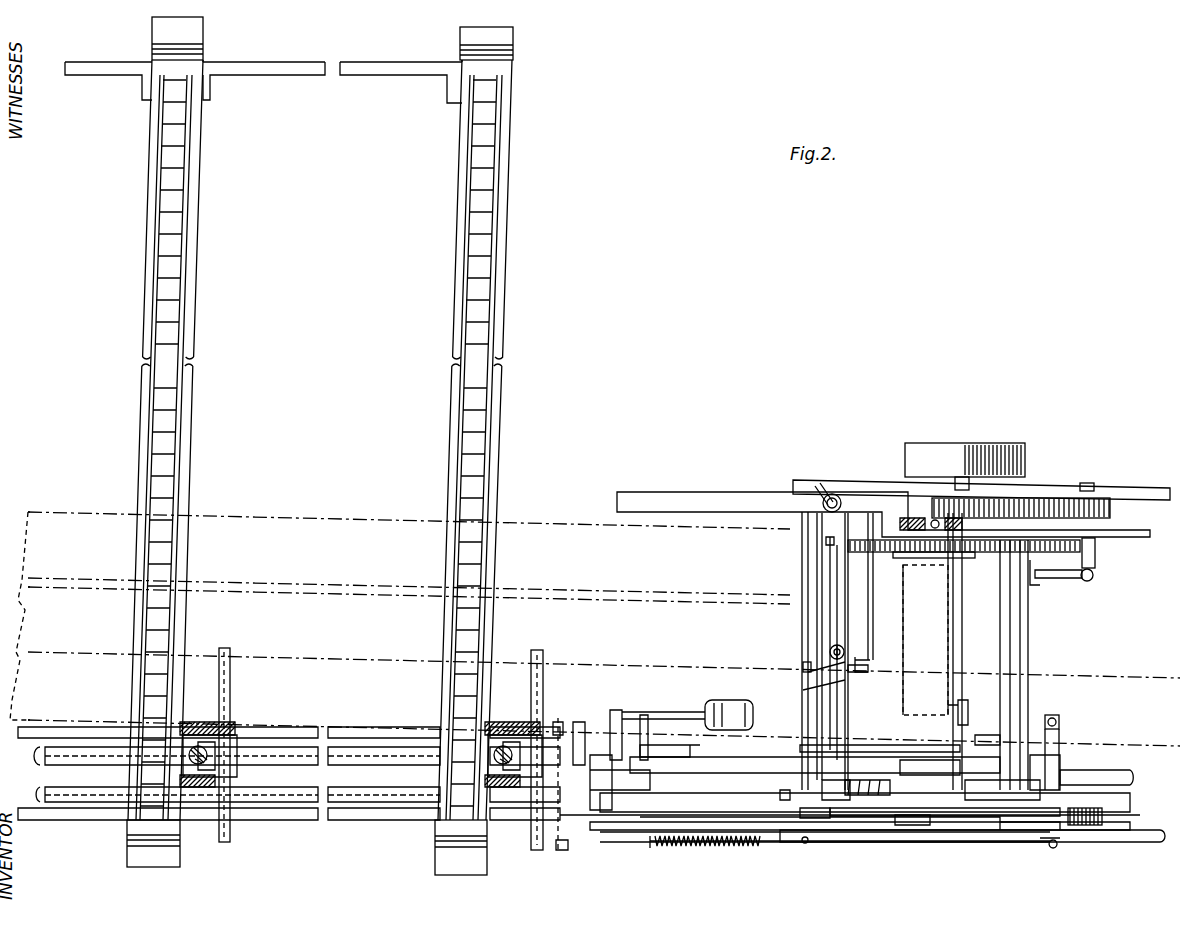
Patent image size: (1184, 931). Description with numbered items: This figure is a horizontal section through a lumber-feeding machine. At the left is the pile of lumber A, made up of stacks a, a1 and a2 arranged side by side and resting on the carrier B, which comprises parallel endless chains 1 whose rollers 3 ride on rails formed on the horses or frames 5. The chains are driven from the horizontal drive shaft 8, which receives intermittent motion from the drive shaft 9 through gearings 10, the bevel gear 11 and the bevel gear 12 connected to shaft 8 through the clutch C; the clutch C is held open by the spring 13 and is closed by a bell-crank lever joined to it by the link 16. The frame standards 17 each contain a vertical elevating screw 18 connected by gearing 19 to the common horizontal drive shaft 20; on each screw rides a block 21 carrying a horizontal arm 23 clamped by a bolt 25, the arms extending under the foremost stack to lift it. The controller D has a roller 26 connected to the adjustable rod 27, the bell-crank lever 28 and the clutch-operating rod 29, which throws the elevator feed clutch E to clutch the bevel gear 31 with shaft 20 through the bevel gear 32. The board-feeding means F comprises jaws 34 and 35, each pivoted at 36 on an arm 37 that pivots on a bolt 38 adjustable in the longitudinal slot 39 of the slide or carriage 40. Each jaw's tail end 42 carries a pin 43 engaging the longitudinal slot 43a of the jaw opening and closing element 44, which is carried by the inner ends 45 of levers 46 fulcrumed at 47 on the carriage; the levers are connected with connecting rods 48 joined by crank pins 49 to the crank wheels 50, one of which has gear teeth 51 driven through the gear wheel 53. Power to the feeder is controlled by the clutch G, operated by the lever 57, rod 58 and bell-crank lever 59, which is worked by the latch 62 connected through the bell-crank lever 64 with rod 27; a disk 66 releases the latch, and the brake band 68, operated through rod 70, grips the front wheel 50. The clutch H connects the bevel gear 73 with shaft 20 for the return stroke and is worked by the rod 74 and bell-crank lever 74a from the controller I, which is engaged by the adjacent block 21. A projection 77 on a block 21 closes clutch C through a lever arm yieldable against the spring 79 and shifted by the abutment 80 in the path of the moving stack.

The endless chains 1 is at (178, 272).
The rollers 3 is at (185, 448).
The horses or frames 5 is at (188, 412).
The horizontal drive shaft 8 is at (355, 802).
The drive shaft 9 is at (965, 456).
The gearings 10 is at (550, 856).
The bevel gear 11 is at (867, 799).
The bevel gear 12 is at (826, 840).
The spring 13 is at (700, 840).
The link 16 is at (640, 825).
The standards 17 is at (192, 725).
The vertical elevating screw 18 is at (232, 738).
The gearing 19 is at (307, 847).
The horizontal drive shaft 20 is at (305, 735).
The block 21 is at (236, 768).
The horizontal arm 23 is at (232, 656).
The bolt 25 is at (260, 748).
The roller 26 is at (733, 703).
The adjustable rod 27 is at (640, 740).
The bell-crank lever 28 is at (865, 794).
The clutch-operating rod 29 is at (755, 842).
The bevel gear 31 is at (1010, 842).
The bevel gear 32 is at (985, 735).
The jaw 34 is at (880, 736).
The jaw 35 is at (870, 666).
The pivot 36 is at (815, 690).
The arm 37 is at (845, 650).
The bolt 38 is at (828, 652).
The longitudinal slot 39 is at (830, 622).
The slide or carriage 40 is at (822, 597).
The tail end 42 is at (830, 668).
The pin 43 is at (803, 667).
The longitudinal slot 43a is at (820, 700).
The jaw opening and closing element 44 is at (815, 562).
The inner ends 45 is at (800, 530).
The levers 46 is at (825, 490).
The fulcrum 47 is at (838, 498).
The connecting rods 48 is at (1022, 486).
The crank pins 49 is at (1090, 485).
The crank disks or wheels 50 is at (1112, 493).
The gear teeth 51 is at (1048, 498).
The gear wheel 53 is at (1097, 552).
The lever 57 is at (1092, 580).
The rod 58 is at (910, 628).
The bell-crank lever 59 is at (968, 705).
The latch 62 is at (1028, 665).
The bell-crank lever 64 is at (660, 757).
The disk 66 is at (1060, 735).
The brake band 68 is at (1104, 813).
The rod 70 is at (915, 830).
The bevel gear 73 is at (945, 813).
The longitudinally movable rod 74 is at (580, 740).
The bell-crank lever 74a is at (565, 850).
The projection 77 is at (578, 720).
The spring 79 is at (620, 782).
The abutment 80 is at (624, 712).
The pile of lumber A is at (595, 616).
The stack a is at (50, 699).
The stack a1 is at (53, 608).
The stack a2 is at (53, 538).
The carrier B is at (190, 322).
The clutch C is at (780, 796).
The controller D is at (648, 712).
The elevator feed clutch E is at (1012, 849).
The board-feeding means F is at (855, 675).
The clutch G is at (1050, 580).
The clutch H is at (1062, 762).
The controller I is at (530, 828).